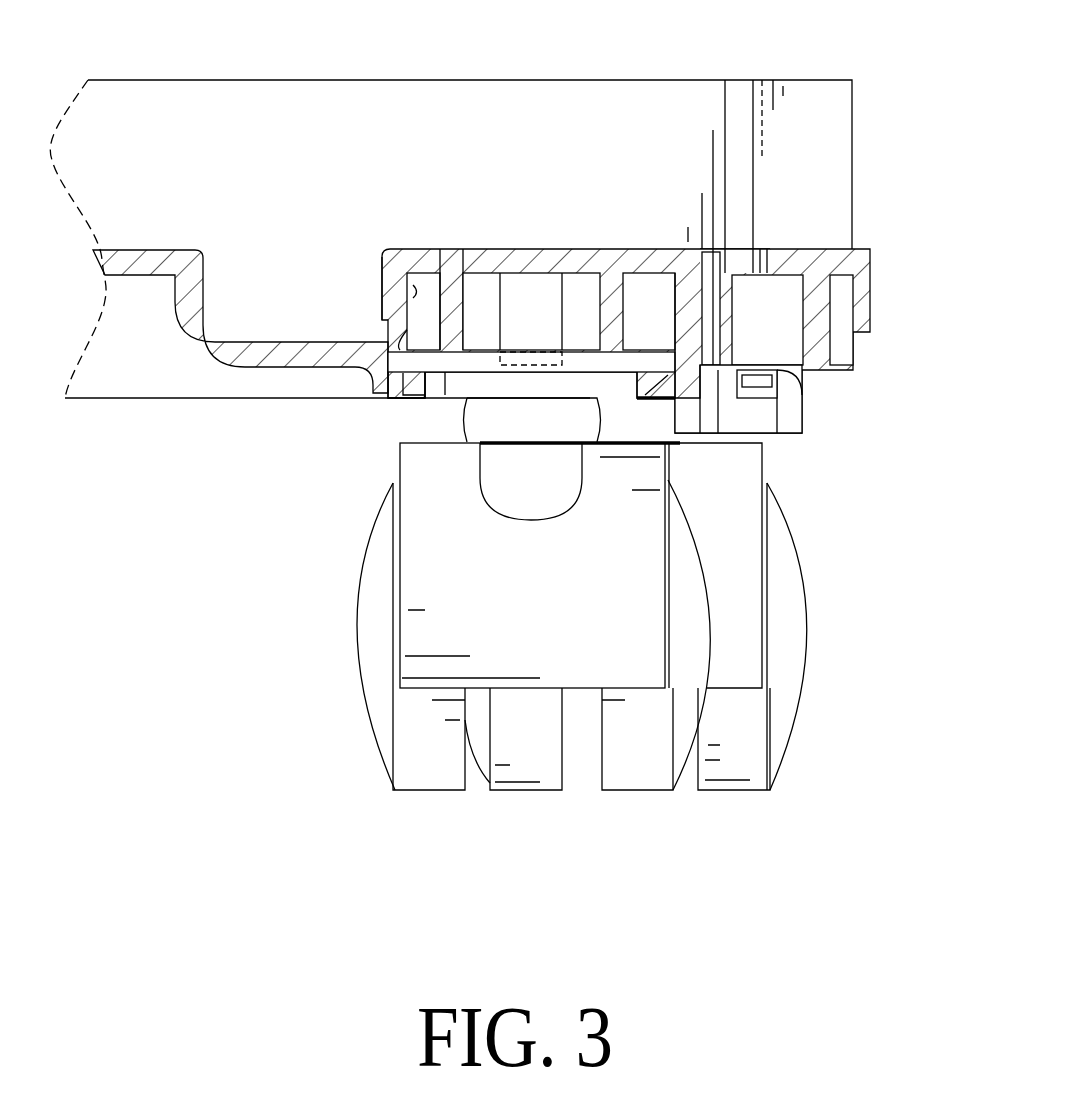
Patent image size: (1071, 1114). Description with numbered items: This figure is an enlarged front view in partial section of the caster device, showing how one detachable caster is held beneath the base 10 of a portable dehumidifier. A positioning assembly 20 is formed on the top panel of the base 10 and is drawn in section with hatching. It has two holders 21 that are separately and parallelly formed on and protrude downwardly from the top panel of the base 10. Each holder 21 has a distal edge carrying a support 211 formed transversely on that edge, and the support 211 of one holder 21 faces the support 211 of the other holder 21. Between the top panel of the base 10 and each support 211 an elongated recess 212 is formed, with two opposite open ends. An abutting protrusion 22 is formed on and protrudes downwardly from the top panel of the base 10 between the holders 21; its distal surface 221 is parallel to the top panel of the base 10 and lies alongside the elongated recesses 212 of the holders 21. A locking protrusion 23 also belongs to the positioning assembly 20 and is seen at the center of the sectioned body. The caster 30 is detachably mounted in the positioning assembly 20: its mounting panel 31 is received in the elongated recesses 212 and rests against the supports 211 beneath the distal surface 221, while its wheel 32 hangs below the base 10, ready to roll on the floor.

The base 10 is at (281, 97).
The positioning assembly 20 is at (634, 228).
The holder 21 is at (393, 312).
The support 211 is at (402, 383).
The elongated recess 212 is at (413, 292).
The abutting protrusion 22 is at (448, 293).
The distal surface 221 is at (445, 375).
The locking protrusion 23 is at (525, 292).
The caster 30 is at (350, 750).
The mounting panel 31 is at (455, 378).
The wheel 32 is at (693, 653).